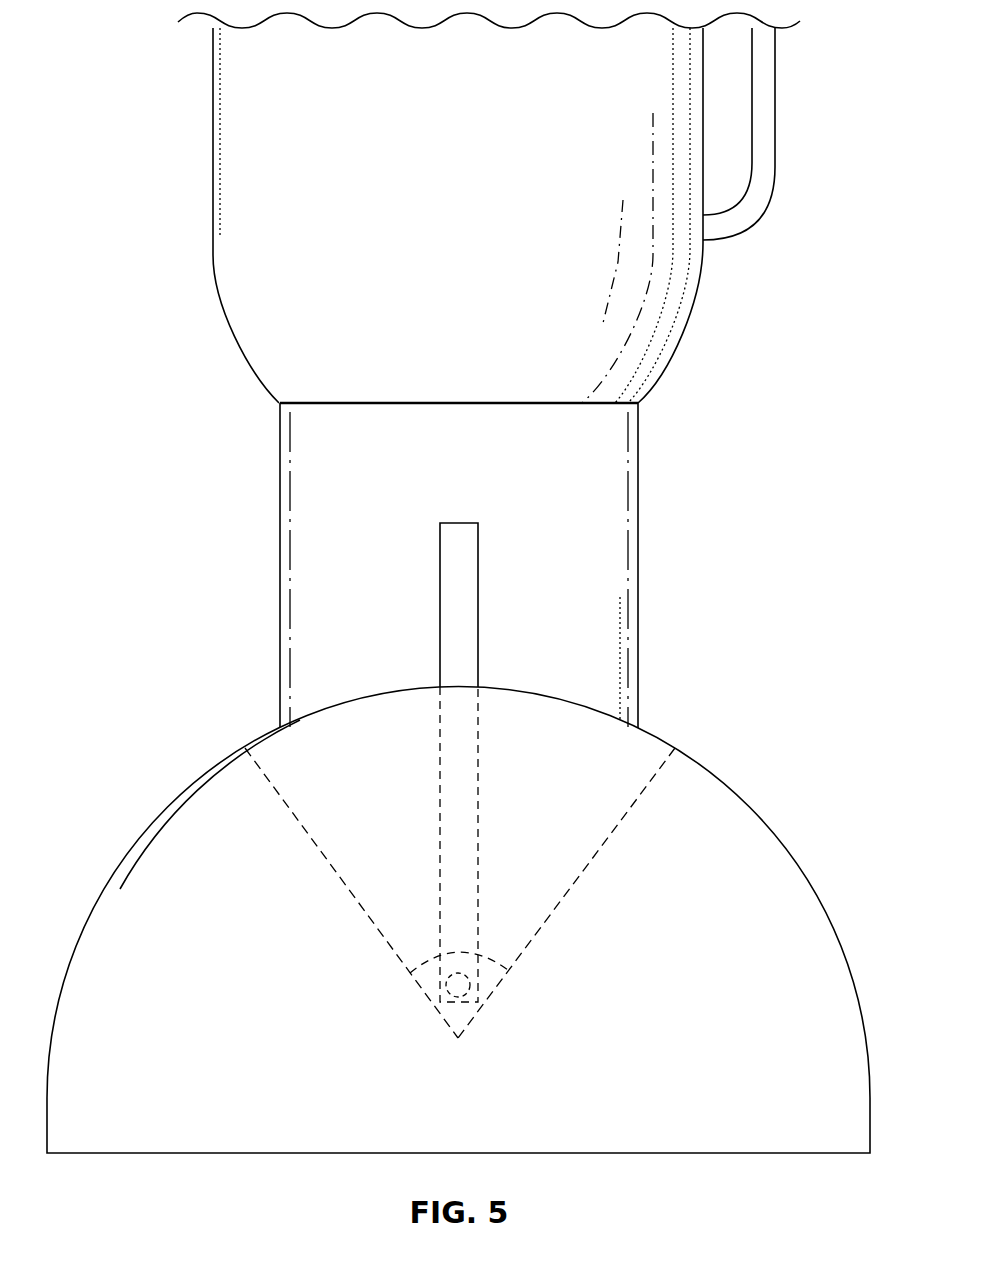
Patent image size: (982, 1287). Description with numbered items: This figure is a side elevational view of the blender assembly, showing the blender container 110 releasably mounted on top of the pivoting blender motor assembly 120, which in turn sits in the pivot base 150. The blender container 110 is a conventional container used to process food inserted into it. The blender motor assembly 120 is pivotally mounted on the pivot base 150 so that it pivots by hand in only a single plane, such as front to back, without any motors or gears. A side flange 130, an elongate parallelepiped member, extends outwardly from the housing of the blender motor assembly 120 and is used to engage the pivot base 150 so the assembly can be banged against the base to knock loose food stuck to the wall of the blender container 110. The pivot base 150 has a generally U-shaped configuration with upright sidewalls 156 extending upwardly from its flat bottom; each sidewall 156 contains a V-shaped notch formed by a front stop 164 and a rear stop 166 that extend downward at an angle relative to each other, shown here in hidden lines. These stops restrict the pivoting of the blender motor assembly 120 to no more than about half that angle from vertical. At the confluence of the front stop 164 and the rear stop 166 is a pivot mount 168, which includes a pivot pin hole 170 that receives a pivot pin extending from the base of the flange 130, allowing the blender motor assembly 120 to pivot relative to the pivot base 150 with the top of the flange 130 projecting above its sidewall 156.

The blender container 110 is at (683, 333).
The pivoting blender motor assembly 120 is at (640, 435).
The side flange 130 is at (438, 567).
The pivot base 150 is at (728, 787).
The sidewall 156 is at (195, 786).
The front stop 164 is at (664, 762).
The rear stop 166 is at (276, 789).
The pivot mount 168 is at (497, 988).
The pivot pin hole 170 is at (432, 1000).